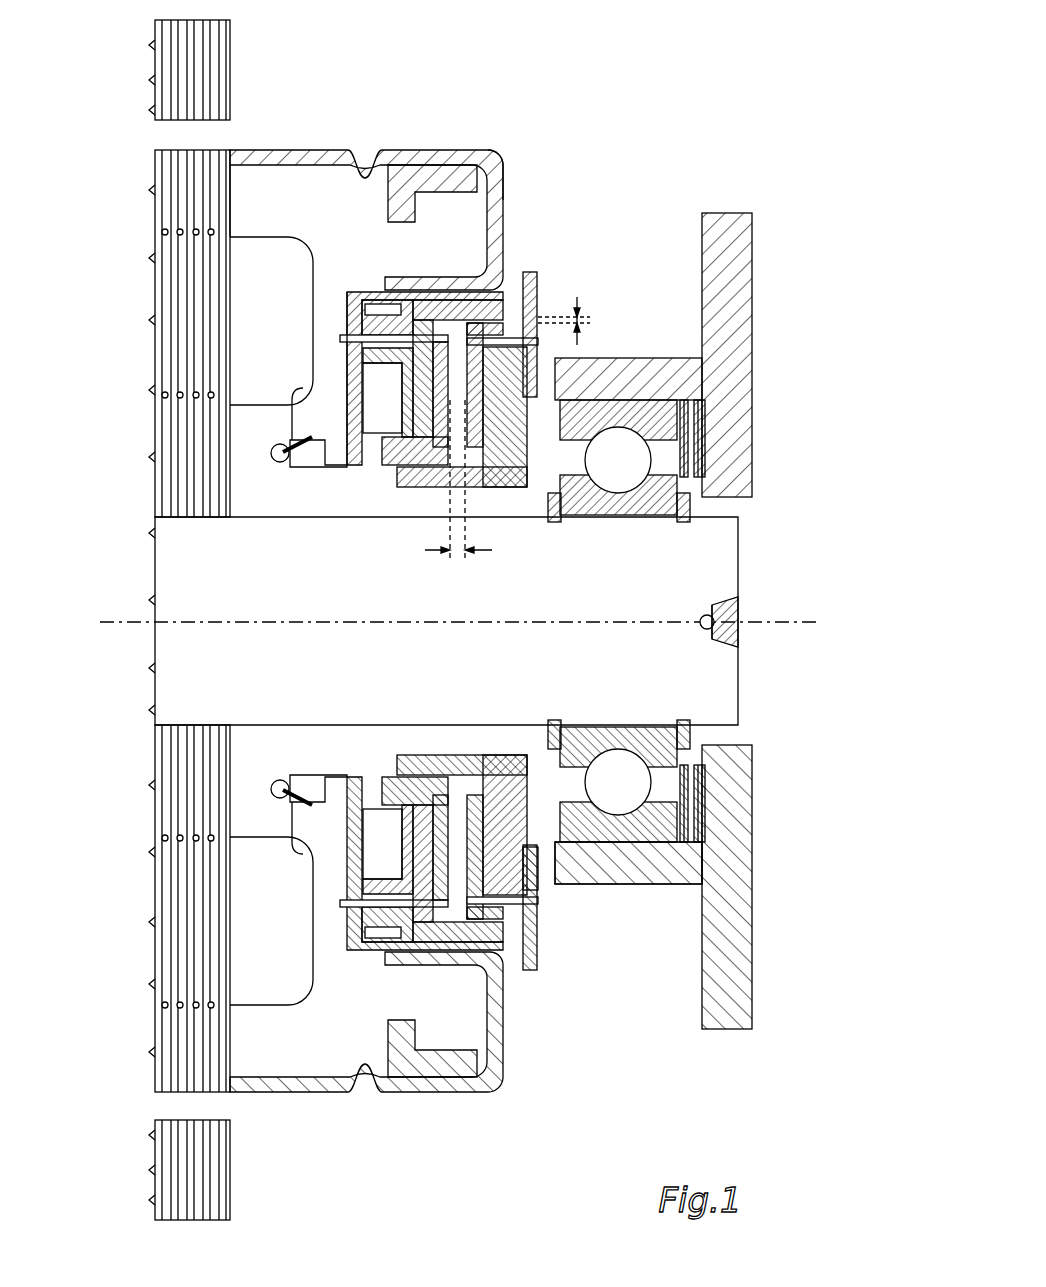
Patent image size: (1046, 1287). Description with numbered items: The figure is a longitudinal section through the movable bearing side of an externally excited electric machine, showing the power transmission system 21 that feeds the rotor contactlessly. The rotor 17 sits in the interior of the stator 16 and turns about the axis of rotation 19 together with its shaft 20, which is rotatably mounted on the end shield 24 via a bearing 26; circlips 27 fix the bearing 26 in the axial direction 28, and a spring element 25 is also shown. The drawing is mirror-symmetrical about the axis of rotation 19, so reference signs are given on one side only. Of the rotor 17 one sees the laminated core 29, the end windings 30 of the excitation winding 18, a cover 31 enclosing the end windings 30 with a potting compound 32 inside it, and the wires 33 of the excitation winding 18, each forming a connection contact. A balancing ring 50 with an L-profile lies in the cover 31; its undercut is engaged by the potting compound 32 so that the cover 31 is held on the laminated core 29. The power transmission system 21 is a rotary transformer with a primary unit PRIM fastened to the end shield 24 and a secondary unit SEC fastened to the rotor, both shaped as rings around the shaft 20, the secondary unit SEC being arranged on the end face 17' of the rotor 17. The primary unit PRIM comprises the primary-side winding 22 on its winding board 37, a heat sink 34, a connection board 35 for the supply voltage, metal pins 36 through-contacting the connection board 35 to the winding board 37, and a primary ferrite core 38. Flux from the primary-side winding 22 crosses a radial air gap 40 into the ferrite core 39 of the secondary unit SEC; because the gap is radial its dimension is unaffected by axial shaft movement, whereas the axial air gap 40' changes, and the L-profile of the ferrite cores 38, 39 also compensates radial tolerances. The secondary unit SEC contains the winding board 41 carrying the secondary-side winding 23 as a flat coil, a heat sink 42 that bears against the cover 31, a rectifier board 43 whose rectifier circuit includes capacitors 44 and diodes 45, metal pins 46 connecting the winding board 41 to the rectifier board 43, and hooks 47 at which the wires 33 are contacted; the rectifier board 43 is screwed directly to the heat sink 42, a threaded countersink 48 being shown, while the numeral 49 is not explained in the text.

The stator 16 is at (230, 52).
The rotor 17 is at (150, 575).
The end face 17' is at (251, 159).
The excitation winding 18 is at (157, 232).
The axis of rotation 19 is at (120, 626).
The shaft 20 is at (157, 560).
The power transmission system 21 is at (557, 1012).
The primary-side winding 22 is at (533, 893).
The secondary-side winding 23 is at (510, 870).
The end shield 24 is at (725, 762).
The spring element 25 is at (705, 795).
The bearing 26 is at (657, 427).
The circlips 27 is at (553, 725).
The axial direction 28 is at (762, 582).
The laminated core 29 is at (192, 177).
The end windings 30 is at (253, 303).
The cover 31 is at (298, 150).
The potting compound 32 is at (460, 218).
The wires 33 is at (293, 827).
The heat sink 34 is at (512, 795).
The connection board 35 is at (530, 850).
The metal pins 36 is at (517, 960).
The winding board 37 is at (502, 900).
The primary ferrite core 38 is at (493, 947).
The ferrite core 39 is at (452, 957).
The radial air gap 40 is at (510, 429).
The axial air gap 40' is at (454, 510).
The winding board 41 is at (628, 863).
The heat sink 42 is at (397, 960).
The rectifier board 43 is at (347, 933).
The capacitors 44 is at (370, 813).
The diodes 45 is at (347, 880).
The metal pins 46 is at (362, 955).
The hooks 47 is at (335, 790).
The countersink with thread 48 is at (380, 290).
The gap 49 is at (465, 407).
The balancing ring 50 is at (503, 172).
The secondary unit SEC is at (362, 392).
The primary unit PRIM is at (647, 398).